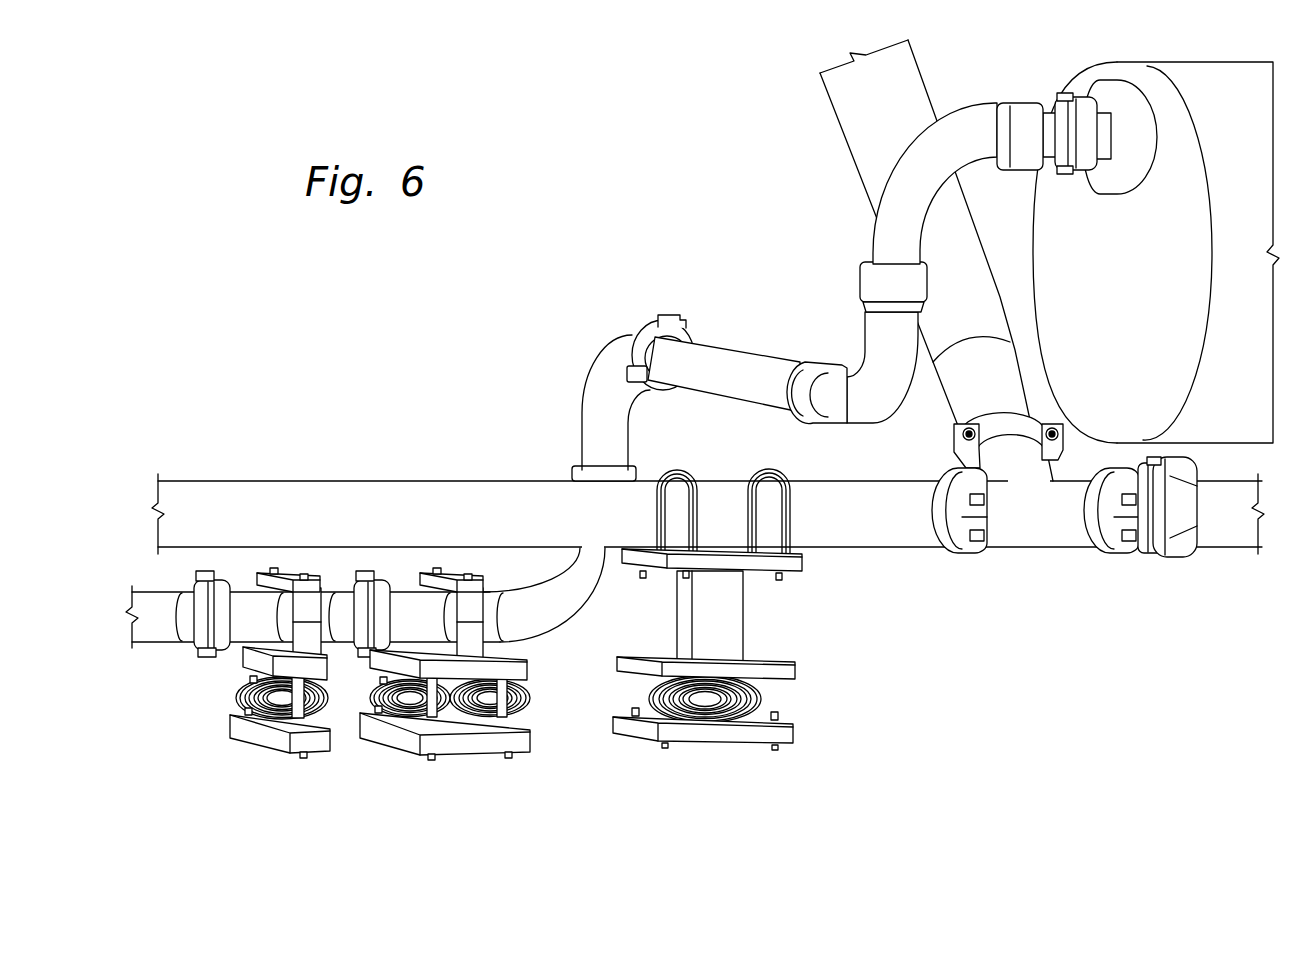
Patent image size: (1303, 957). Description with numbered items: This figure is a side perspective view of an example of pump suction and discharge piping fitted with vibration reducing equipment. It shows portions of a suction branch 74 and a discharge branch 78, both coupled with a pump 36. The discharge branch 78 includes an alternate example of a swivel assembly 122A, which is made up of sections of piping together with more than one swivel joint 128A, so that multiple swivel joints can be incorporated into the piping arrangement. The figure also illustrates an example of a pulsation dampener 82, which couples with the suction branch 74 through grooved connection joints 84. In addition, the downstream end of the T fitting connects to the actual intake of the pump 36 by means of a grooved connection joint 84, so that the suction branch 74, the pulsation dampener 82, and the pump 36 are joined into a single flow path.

The pump 36 is at (1106, 63).
The swivel assembly 122A is at (836, 222).
The swivel joint 128A is at (860, 271).
The discharge branch 78 is at (733, 350).
The pulsation dampener 82 is at (945, 420).
The suction branch 74 is at (505, 479).
The grooved connection joint 84 is at (958, 556).